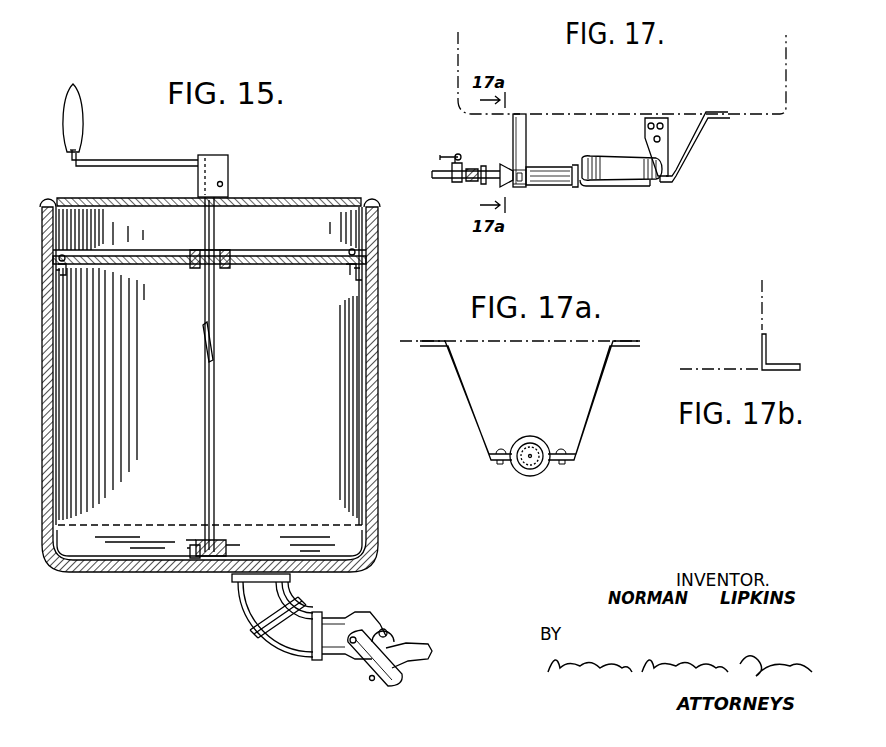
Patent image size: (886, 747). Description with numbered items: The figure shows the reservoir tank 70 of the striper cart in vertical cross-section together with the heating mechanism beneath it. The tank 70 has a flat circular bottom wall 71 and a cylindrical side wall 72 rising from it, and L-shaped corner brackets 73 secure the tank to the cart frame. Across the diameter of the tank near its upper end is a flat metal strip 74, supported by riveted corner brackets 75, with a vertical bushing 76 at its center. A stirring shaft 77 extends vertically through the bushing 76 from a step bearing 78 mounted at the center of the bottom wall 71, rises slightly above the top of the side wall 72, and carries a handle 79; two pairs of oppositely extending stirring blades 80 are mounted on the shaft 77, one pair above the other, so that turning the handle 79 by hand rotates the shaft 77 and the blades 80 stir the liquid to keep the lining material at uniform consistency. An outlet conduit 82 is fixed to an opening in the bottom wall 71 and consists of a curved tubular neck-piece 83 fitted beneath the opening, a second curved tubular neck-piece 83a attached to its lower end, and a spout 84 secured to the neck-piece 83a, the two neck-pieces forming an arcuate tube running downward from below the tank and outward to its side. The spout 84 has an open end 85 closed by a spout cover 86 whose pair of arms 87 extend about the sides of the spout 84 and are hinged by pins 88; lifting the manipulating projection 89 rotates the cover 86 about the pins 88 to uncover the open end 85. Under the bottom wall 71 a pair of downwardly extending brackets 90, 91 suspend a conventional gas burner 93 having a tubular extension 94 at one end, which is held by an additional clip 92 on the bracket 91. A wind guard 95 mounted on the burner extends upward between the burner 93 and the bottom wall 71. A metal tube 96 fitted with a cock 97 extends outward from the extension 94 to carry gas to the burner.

In FIG. 15, the reservoir tank 70 is at (384, 523).
In FIG. 15, the bottom wall 71 is at (145, 572).
In FIG. 17, the bottom wall 71 is at (576, 116).
In FIG. 15, the side wall 72 is at (372, 424).
In FIG. 17, the side wall 72 is at (455, 50).
In FIG. 17B, the corner bracket 73 is at (770, 355).
In FIG. 15, the metal strip 74 is at (302, 238).
In FIG. 15, the corner bracket 75 is at (350, 272).
In FIG. 15, the bushing 76 is at (220, 250).
In FIG. 15, the stirring shaft 77 is at (216, 408).
In FIG. 15, the step bearing 78 is at (228, 555).
In FIG. 15, the handle 79 is at (147, 158).
In FIG. 15, the stirring blade 80 is at (215, 345).
In FIG. 15, the outlet conduit 82 is at (240, 664).
In FIG. 15, the curved tubular neck-piece 83 is at (252, 622).
In FIG. 15, the second curved tubular neck-piece 83a is at (300, 654).
In FIG. 15, the spout 84 is at (353, 611).
In FIG. 15, the open end 85 is at (376, 684).
In FIG. 15, the spout cover 86 is at (412, 677).
In FIG. 15, the arm 87 is at (384, 630).
In FIG. 15, the pin 88 is at (352, 644).
In FIG. 15, the manipulating projection 89 is at (420, 646).
In FIG. 17, the bracket 90 is at (694, 166).
In FIG. 17, the bracket 91 is at (512, 140).
In FIG. 17A, the bracket 91 is at (594, 382).
In FIG. 17A, the clip 92 is at (532, 476).
In FIG. 17, the gas burner 93 is at (626, 194).
In FIG. 17, the tubular extension 94 is at (560, 190).
In FIG. 17A, the tubular extension 94 is at (536, 443).
In FIG. 17, the wind guard 95 is at (668, 128).
In FIG. 17, the metal tube 96 is at (446, 184).
In FIG. 17, the cock 97 is at (466, 164).